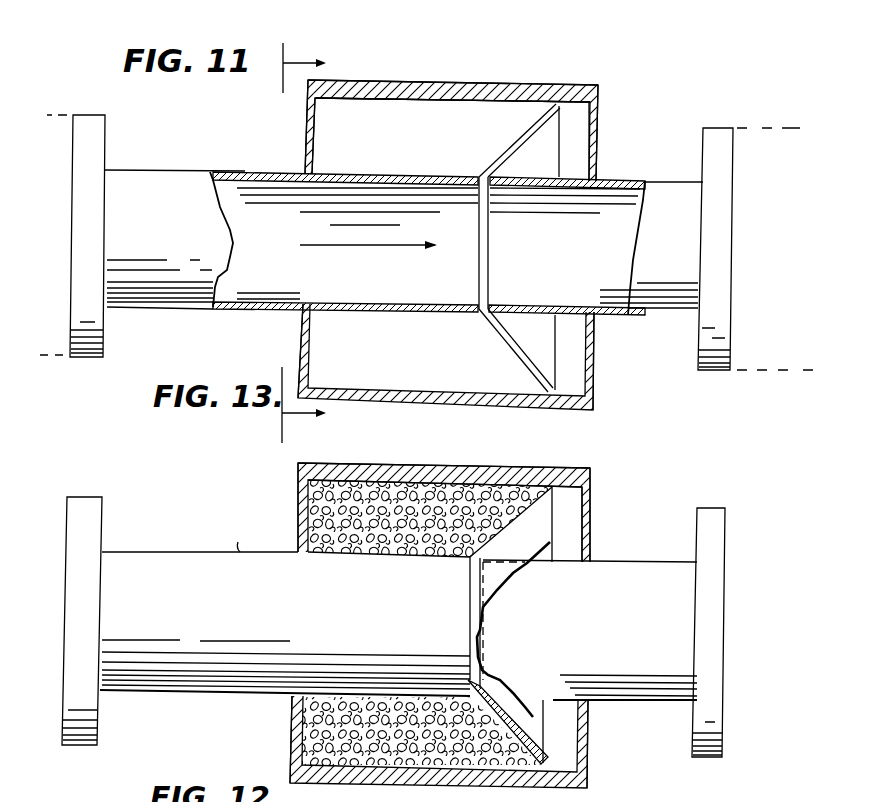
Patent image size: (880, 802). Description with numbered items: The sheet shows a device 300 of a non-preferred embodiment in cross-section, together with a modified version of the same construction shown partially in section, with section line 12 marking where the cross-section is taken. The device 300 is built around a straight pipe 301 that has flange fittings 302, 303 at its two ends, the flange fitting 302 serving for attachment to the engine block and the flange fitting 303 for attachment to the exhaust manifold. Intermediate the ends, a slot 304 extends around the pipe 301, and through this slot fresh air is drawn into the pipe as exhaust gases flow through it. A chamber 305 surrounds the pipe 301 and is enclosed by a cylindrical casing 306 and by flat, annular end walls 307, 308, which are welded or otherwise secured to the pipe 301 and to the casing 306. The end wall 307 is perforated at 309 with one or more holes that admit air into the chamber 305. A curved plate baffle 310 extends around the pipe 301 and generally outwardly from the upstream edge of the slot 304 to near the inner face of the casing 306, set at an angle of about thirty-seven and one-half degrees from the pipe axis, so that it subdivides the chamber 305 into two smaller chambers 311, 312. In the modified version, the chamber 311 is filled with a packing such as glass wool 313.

In FIG. 11, the device 300 is at (551, 77).
In FIG. 13, the device 300 is at (440, 625).
In FIG. 11, the straight pipe 301 is at (245, 170).
In FIG. 13, the straight pipe 301 is at (398, 629).
In FIG. 11, the flange fitting 302 is at (88, 118).
In FIG. 13, the flange fitting 302 is at (90, 500).
In FIG. 11, the flange fitting 303 is at (722, 130).
In FIG. 13, the flange fitting 303 is at (713, 508).
In FIG. 11, the slot 304 is at (536, 248).
In FIG. 13, the slot 304 is at (526, 625).
In FIG. 11, the chamber 305 is at (465, 120).
In FIG. 11, the cylindrical casing 306 is at (440, 92).
In FIG. 13, the cylindrical casing 306 is at (410, 477).
In FIG. 11, the end wall 307 is at (300, 133).
In FIG. 13, the end wall 307 is at (298, 520).
In FIG. 11, the end wall 308 is at (598, 136).
In FIG. 13, the end wall 308 is at (590, 523).
In FIG. 11, the perforation 309 is at (305, 95).
In FIG. 13, the perforation 309 is at (297, 490).
In FIG. 11, the curved plate baffle 310 is at (520, 133).
In FIG. 13, the curved plate baffle 310 is at (518, 496).
In FIG. 11, the chamber 311 is at (373, 128).
In FIG. 11, the chamber 312 is at (570, 128).
In FIG. 13, the chamber 312 is at (572, 510).
In FIG. 13, the glass wool packing 313 is at (460, 478).
In FIG. 11, the section line 12- 12 is at (315, 243).